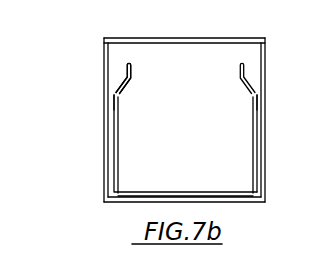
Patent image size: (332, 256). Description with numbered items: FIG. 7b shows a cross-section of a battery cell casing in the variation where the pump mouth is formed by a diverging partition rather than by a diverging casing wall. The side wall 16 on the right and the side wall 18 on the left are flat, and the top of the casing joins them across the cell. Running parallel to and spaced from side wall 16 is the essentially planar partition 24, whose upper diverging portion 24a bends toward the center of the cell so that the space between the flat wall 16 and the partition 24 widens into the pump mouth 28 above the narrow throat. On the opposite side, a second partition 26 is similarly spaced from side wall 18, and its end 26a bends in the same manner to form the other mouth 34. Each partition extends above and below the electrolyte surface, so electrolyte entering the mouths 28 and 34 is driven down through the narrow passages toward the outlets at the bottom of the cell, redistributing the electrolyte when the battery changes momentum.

The side wall 16 is at (266, 78).
The side wall 18 is at (108, 100).
The partition 24 is at (266, 106).
The diverging portion 24a is at (247, 87).
The partition 26 is at (112, 122).
The distal end 26a is at (127, 84).
The pump mouth 28 is at (257, 68).
The mouth 34 is at (113, 80).